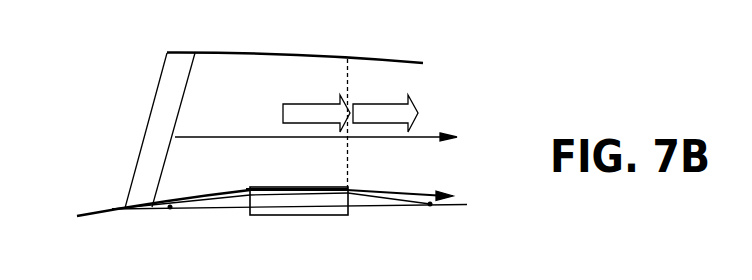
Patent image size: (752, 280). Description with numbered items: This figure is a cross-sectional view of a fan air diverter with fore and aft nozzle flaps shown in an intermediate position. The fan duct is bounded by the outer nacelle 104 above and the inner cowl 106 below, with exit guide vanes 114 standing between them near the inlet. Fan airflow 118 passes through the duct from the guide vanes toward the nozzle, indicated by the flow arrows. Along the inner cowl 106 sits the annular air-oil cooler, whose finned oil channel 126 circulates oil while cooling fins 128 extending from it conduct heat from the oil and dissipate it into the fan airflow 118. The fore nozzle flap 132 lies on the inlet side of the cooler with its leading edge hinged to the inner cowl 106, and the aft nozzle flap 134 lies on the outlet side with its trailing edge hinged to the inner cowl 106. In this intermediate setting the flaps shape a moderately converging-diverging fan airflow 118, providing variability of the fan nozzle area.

The outer nacelle 104 is at (402, 60).
The inner cowl 106 is at (440, 207).
The exit guide vanes 114 is at (163, 67).
The fan airflow 118 is at (136, 206).
The finned oil channel 126 is at (323, 215).
The cooling fins 128 is at (262, 188).
The fore nozzle flap 132 is at (216, 198).
The aft nozzle flap 134 is at (393, 206).